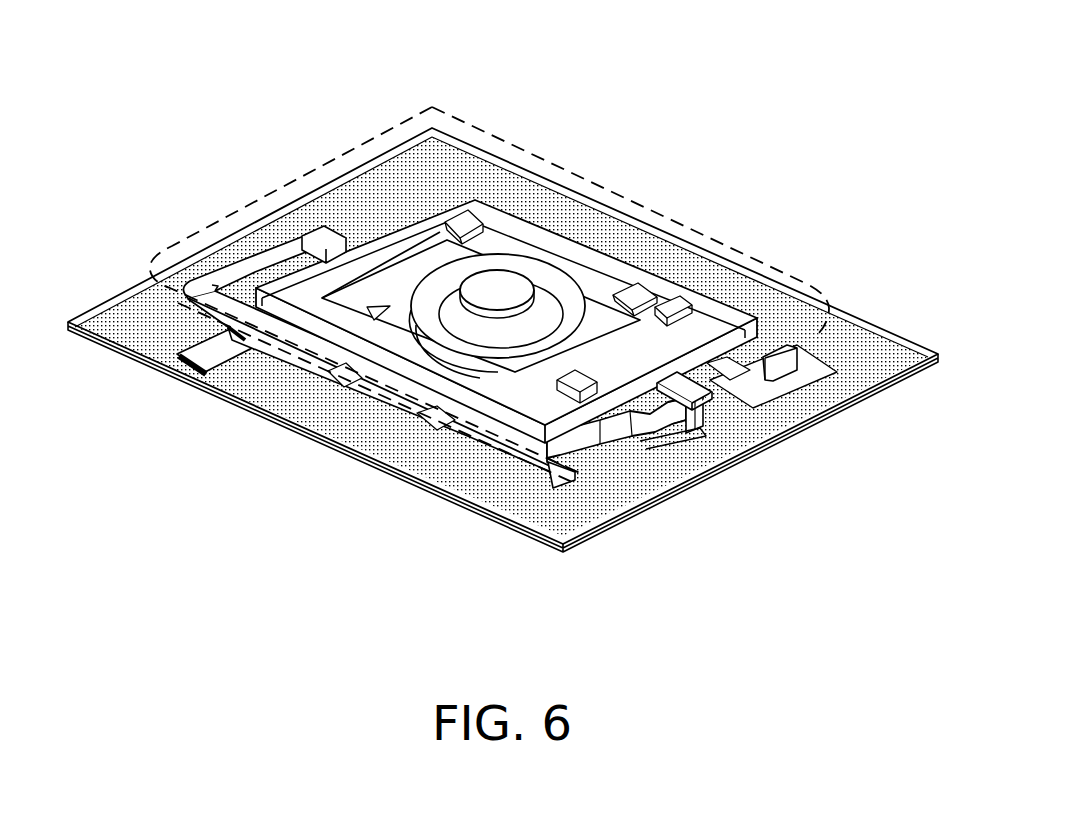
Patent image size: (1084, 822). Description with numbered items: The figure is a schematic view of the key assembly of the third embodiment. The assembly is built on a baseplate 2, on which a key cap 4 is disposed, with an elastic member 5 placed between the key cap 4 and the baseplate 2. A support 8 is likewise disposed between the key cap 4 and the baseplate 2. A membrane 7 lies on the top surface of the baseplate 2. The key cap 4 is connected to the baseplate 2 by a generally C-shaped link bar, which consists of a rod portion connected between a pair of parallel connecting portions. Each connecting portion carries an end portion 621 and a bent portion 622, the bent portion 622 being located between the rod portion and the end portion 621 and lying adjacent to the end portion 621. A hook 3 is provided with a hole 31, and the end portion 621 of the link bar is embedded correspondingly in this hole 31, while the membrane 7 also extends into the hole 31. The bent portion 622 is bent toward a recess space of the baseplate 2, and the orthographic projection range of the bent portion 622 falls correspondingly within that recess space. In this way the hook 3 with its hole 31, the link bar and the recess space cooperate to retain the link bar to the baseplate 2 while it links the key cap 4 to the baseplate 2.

The baseplate 2 is at (95, 343).
The hook 3 is at (724, 461).
The hole 31 is at (695, 430).
The key cap 4 is at (370, 146).
The elastic member 5 is at (497, 288).
The end portion 621 is at (687, 421).
The bent portion 622 is at (640, 421).
The membrane 7 is at (103, 304).
The support 8 is at (380, 250).